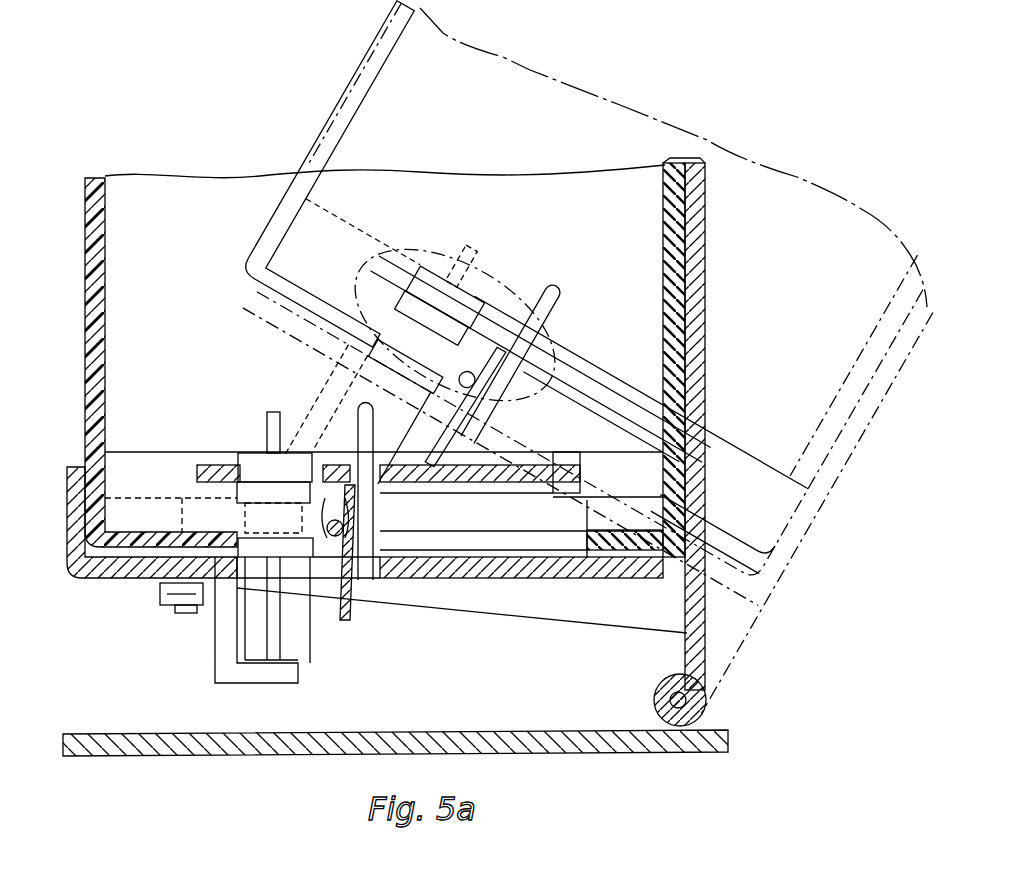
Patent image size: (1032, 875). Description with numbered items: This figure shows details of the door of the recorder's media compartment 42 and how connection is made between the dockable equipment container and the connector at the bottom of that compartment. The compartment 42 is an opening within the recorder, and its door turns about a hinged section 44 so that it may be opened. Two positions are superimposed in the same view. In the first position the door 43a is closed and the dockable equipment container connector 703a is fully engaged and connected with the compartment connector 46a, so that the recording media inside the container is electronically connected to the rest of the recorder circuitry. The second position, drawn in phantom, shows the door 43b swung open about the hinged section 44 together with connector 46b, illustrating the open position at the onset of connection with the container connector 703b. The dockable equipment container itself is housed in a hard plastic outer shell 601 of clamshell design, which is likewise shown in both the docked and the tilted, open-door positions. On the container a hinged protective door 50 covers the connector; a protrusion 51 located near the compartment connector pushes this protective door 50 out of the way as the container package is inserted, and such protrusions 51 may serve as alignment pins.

The outer shell 601 is at (84, 194).
The door (closed position) 43a is at (706, 264).
The door (open position) 43b is at (845, 456).
The hinged section 44 is at (706, 714).
The media compartment 42 is at (605, 704).
The dockable equipment container connector (engaged) 703a is at (243, 513).
The dockable equipment container connector (onset of connection) 703b is at (365, 250).
The connector (closed door position) 46a is at (240, 513).
The connector (open door position) 46b is at (327, 326).
The protrusion 51 is at (375, 512).
The hinged protective door 50 is at (350, 612).